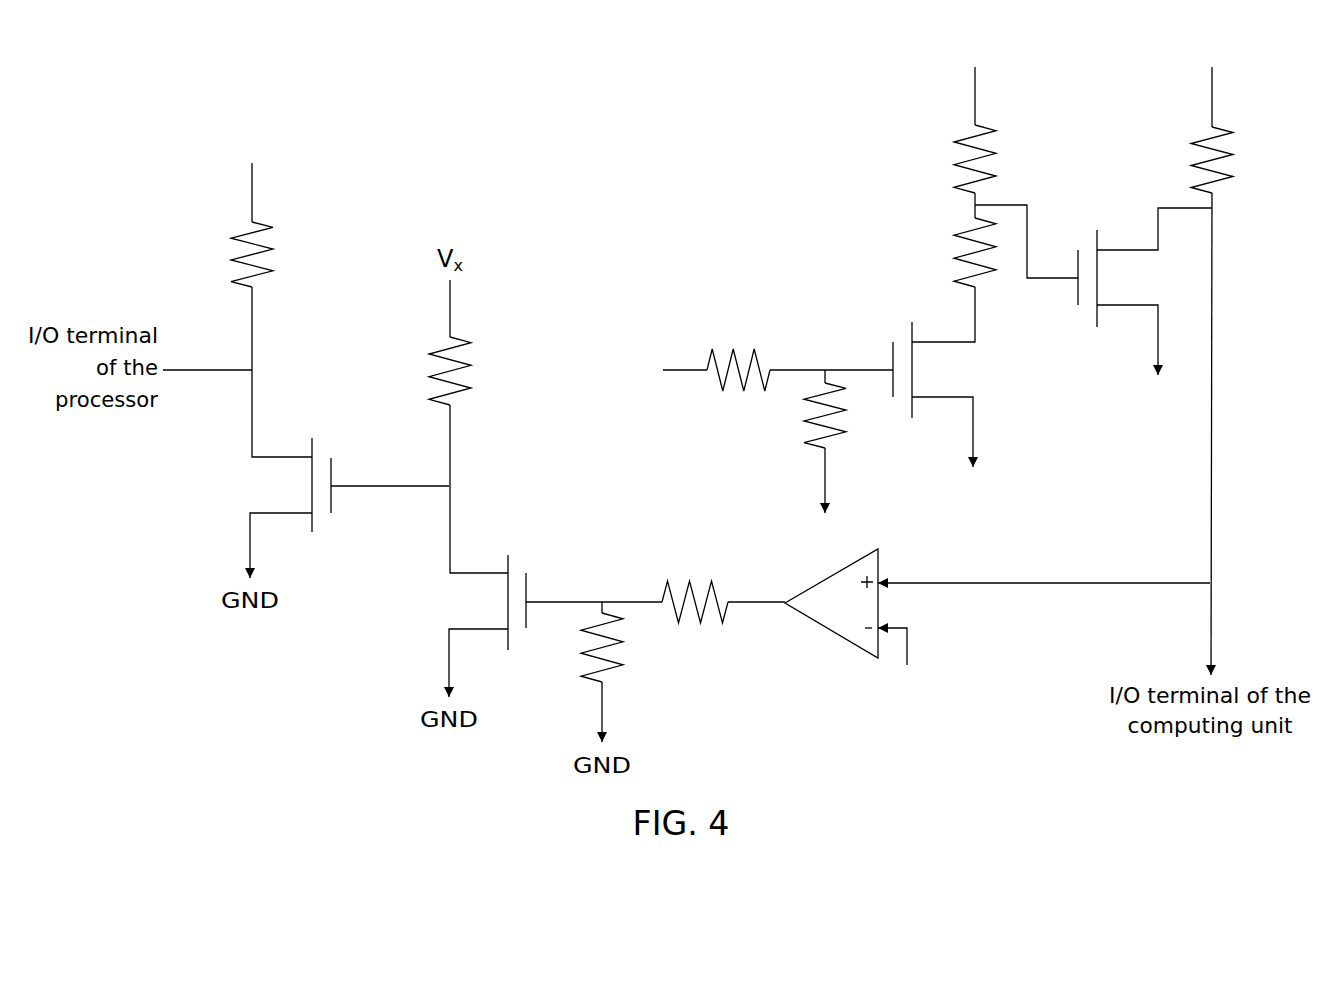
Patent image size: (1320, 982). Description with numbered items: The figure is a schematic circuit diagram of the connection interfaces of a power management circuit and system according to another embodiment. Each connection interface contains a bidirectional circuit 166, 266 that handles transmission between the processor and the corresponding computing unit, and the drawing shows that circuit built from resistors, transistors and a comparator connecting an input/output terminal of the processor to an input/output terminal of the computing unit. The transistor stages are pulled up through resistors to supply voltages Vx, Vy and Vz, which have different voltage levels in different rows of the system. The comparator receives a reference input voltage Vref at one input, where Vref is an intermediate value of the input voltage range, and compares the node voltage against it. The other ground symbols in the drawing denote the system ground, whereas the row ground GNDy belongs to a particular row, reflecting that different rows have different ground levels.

The bidirectional circuit 166 is at (732, 302).
The bidirectional circuit 266 is at (870, 291).
The voltage Vx is at (271, 292).
The voltage Vy is at (975, 161).
The voltage Vz is at (1212, 355).
The reference input voltage Vref is at (902, 668).
The row ground GNDy is at (1145, 360).